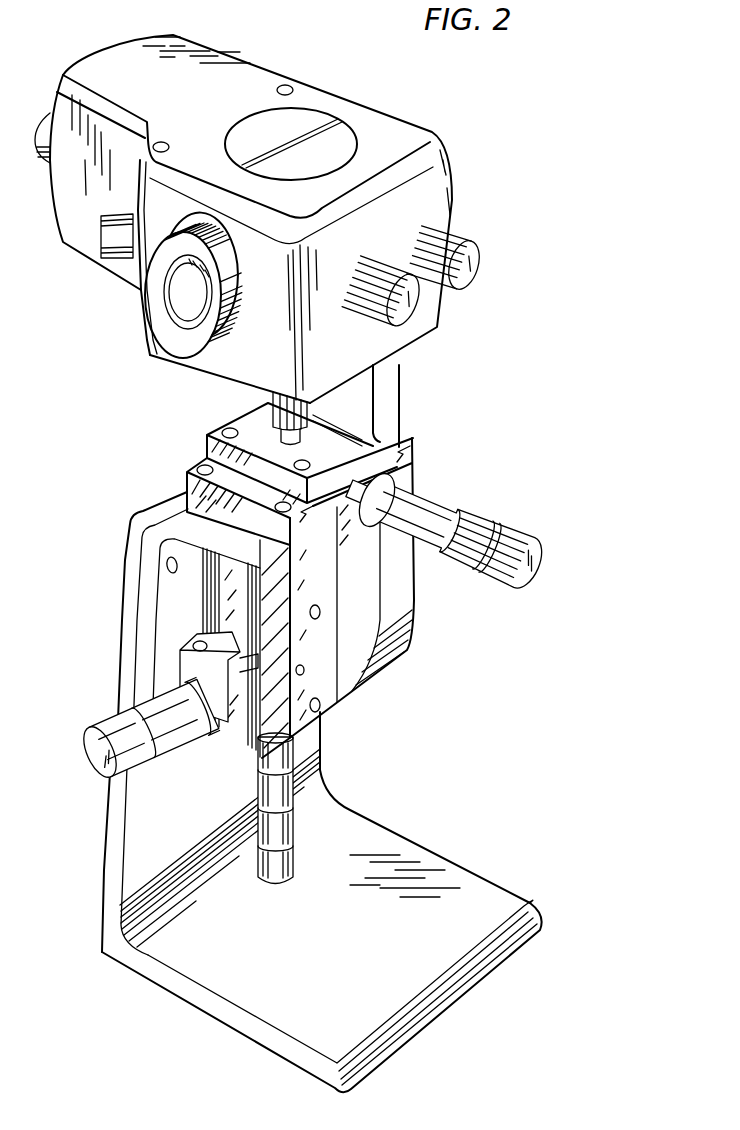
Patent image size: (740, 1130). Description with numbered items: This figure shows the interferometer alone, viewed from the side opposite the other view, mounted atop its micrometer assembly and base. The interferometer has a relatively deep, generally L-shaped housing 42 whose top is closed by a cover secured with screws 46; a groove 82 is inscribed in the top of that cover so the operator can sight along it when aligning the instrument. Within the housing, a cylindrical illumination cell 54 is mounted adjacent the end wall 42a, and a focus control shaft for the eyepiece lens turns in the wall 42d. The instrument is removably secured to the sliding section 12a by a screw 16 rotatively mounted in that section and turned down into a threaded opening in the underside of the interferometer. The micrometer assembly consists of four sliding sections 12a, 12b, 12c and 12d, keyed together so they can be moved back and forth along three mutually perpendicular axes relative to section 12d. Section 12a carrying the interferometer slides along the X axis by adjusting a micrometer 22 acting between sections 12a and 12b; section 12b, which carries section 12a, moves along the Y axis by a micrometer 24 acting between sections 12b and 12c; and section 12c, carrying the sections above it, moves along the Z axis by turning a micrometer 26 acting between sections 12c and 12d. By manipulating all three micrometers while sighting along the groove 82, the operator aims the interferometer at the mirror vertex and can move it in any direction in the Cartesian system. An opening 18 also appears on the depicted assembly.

The sliding section 12a is at (215, 432).
The sliding section 12b is at (385, 670).
The sliding section 12c is at (227, 607).
The sliding section 12d is at (148, 654).
The screw 16 is at (313, 413).
The hole 18 is at (163, 571).
The micrometer 22 is at (473, 523).
The micrometer 24 is at (107, 730).
The micrometer 26 is at (294, 860).
The housing 42 is at (65, 218).
The end wall 42a is at (218, 369).
The wall 42d is at (143, 303).
The screws 46 is at (287, 86).
The cylindrical illumination cell 54 is at (217, 305).
The groove 82 is at (330, 117).